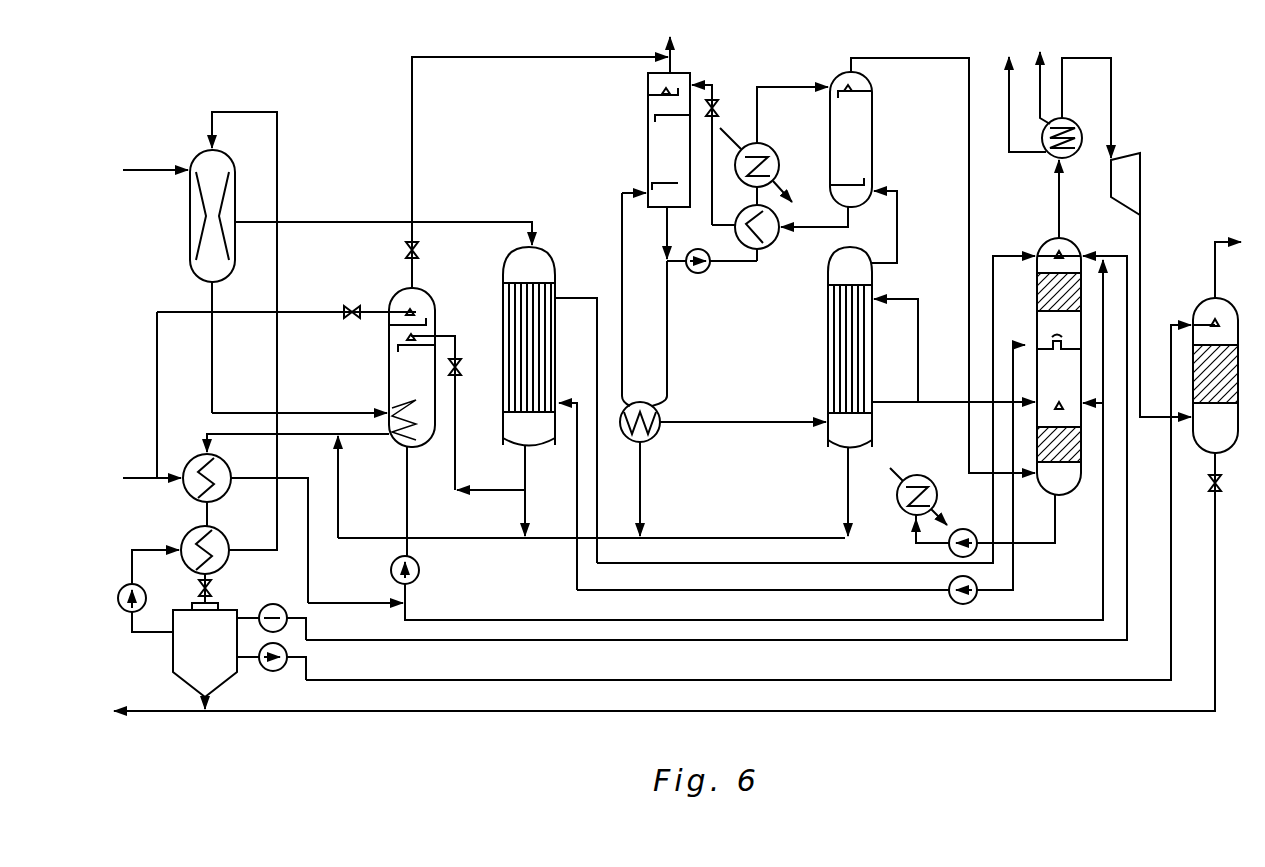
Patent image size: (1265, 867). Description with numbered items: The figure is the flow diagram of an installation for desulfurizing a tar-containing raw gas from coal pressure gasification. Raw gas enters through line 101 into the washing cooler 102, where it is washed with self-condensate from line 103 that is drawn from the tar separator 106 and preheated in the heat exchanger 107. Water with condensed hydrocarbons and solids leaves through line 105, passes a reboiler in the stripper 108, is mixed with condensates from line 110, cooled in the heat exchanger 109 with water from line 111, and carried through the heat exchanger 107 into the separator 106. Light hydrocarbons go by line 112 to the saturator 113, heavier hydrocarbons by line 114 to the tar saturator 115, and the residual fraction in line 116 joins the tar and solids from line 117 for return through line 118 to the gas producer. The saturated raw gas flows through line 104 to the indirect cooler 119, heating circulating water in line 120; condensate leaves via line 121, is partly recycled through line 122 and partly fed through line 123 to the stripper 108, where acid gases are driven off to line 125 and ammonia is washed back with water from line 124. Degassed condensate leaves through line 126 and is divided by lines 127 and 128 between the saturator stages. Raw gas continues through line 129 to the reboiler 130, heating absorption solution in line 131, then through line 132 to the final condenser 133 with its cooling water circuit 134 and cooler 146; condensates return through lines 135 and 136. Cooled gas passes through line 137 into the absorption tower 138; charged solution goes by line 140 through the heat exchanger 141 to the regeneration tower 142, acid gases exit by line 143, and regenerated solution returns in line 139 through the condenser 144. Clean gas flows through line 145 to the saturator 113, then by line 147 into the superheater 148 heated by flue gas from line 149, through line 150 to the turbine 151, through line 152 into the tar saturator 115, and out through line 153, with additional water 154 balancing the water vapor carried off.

The raw gas line 101 is at (155, 153).
The washing cooler 102 is at (212, 281).
The self-condensate line 103 is at (197, 359).
The raw gas line 104 is at (383, 217).
The condensate line 105 is at (298, 439).
The tar separator 106 is at (239, 650).
The heat exchanger 107 is at (222, 564).
The stripper 108 is at (412, 422).
The heat exchanger 109 is at (245, 528).
The condensate line 110 is at (591, 555).
The water line 111 is at (355, 591).
The light hydrocarbon line 112 is at (716, 451).
The two-stage clean gas saturator 113 is at (1059, 366).
The heavy hydrocarbon line 114 is at (748, 503).
The tar saturator 115 is at (1195, 470).
The residual fraction line 116 is at (757, 601).
The tar and solids line 117 is at (226, 701).
The return line 118 is at (207, 699).
The indirect cooler 119 is at (550, 405).
The circulating water line 120 is at (806, 430).
The condensate line 121 is at (546, 467).
The recycle line 122 is at (546, 513).
The condensate line 123 is at (468, 414).
The water line 124 is at (273, 380).
The acid gas line 125 is at (537, 172).
The degassed condensate line 126 is at (747, 513).
The water line 127 is at (1089, 331).
The water line 128 is at (1080, 241).
The precooled raw gas line 129 is at (578, 479).
The reboiler 130 is at (656, 433).
The absorption solution line 131 is at (641, 299).
The gas line 132 is at (743, 407).
The final condenser 133 is at (873, 347).
The cooling water circuit 134 is at (963, 464).
The condensate return line 135 is at (661, 489).
The condensate return line 136 is at (827, 491).
The cooled raw gas line 137 is at (907, 227).
The absorption tower 138 is at (851, 139).
The regenerated solution line 139 is at (712, 253).
The charged solution line 140 is at (814, 213).
The heat exchanger 141 is at (772, 239).
The regeneration tower 142 is at (678, 166).
The exhaust line 143 is at (692, 53).
The condenser 144 is at (774, 146).
The clean gas line 145 is at (943, 265).
The cooler 146 is at (924, 486).
The saturated clean gas line 147 is at (1081, 214).
The superheater 148 is at (1082, 173).
The flue gas line 149 is at (1045, 105).
The superheated gas line 150 is at (1107, 108).
The impulse turbine 151 is at (1127, 184).
The expanded gas line 152 is at (1165, 316).
The clean gas outlet line 153 is at (1220, 330).
The additional water 154 is at (148, 462).